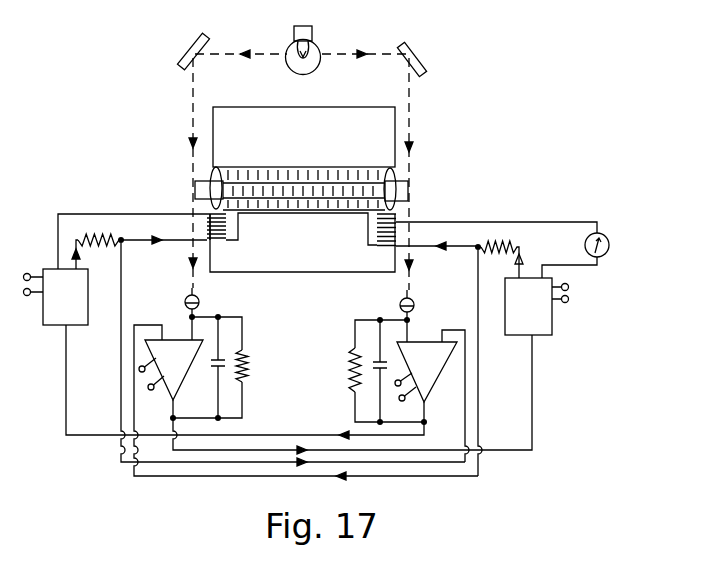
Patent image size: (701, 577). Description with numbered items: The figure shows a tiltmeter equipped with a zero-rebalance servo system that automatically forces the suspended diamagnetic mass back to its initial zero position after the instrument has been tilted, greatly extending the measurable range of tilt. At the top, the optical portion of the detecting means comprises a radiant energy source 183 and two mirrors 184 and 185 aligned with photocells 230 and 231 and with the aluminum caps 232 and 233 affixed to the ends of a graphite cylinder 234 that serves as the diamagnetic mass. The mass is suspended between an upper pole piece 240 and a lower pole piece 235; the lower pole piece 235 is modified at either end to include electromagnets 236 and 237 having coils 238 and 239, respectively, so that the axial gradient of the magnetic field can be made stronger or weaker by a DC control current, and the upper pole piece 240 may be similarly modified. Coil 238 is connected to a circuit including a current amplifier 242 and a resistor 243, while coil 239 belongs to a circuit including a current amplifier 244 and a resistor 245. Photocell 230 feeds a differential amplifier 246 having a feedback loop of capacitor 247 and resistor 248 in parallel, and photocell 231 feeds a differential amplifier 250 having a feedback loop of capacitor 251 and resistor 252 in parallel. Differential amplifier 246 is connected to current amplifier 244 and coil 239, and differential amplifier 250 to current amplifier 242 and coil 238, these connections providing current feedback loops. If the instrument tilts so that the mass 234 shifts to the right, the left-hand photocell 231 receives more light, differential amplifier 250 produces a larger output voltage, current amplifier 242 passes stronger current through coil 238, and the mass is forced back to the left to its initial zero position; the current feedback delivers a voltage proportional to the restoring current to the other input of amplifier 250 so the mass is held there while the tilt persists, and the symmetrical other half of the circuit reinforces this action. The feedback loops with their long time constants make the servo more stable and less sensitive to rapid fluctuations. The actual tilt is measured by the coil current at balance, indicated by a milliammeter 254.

The radiant energy source 183 is at (312, 65).
The mirror 184 is at (421, 57).
The mirror 185 is at (190, 50).
The upper pole piece 240 is at (366, 134).
The lower pole piece 235 is at (356, 264).
The aluminum cap 232 is at (403, 189).
The aluminum cap 233 is at (200, 181).
The graphite cylinder 234 is at (360, 192).
The electromagnet 237 is at (212, 214).
The coil 239 is at (211, 224).
The electromagnet 236 is at (398, 212).
The coil 238 is at (396, 228).
The milliammeter 254 is at (610, 241).
The resistor 243 is at (506, 246).
The resistor 245 is at (102, 238).
The current amplifier 244 is at (84, 301).
The current amplifier 242 is at (546, 309).
The photocell 231 is at (186, 298).
The photocell 230 is at (414, 303).
The differential amplifier 250 is at (192, 362).
The differential amplifier 246 is at (444, 367).
The capacitor 251 is at (214, 369).
The capacitor 247 is at (376, 372).
The resistor 252 is at (248, 362).
The resistor 248 is at (351, 357).